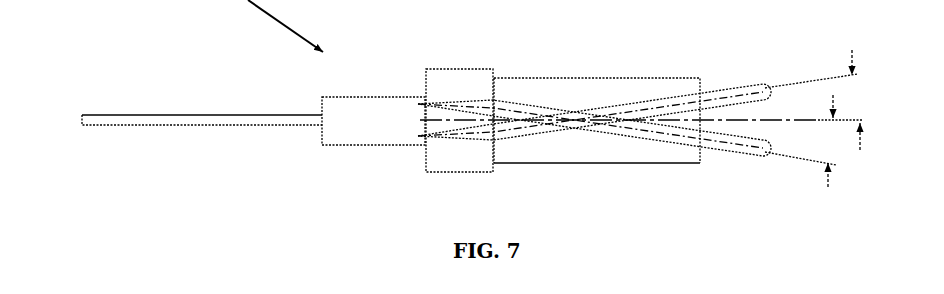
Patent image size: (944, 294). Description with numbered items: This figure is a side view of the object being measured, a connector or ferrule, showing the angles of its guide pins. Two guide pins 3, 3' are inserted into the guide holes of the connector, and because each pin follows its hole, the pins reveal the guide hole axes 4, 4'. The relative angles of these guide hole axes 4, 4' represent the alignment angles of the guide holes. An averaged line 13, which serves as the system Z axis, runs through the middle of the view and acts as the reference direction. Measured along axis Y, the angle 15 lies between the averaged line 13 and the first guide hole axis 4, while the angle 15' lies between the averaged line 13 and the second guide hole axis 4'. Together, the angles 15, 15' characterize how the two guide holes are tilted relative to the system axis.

The guide pin 3 is at (594, 74).
The guide pin 3' is at (594, 158).
The guide hole axis 4 is at (811, 58).
The guide hole axis 4' is at (798, 177).
The averaged line 13 is at (817, 123).
The angle 15 is at (853, 84).
The angle 15' is at (844, 155).